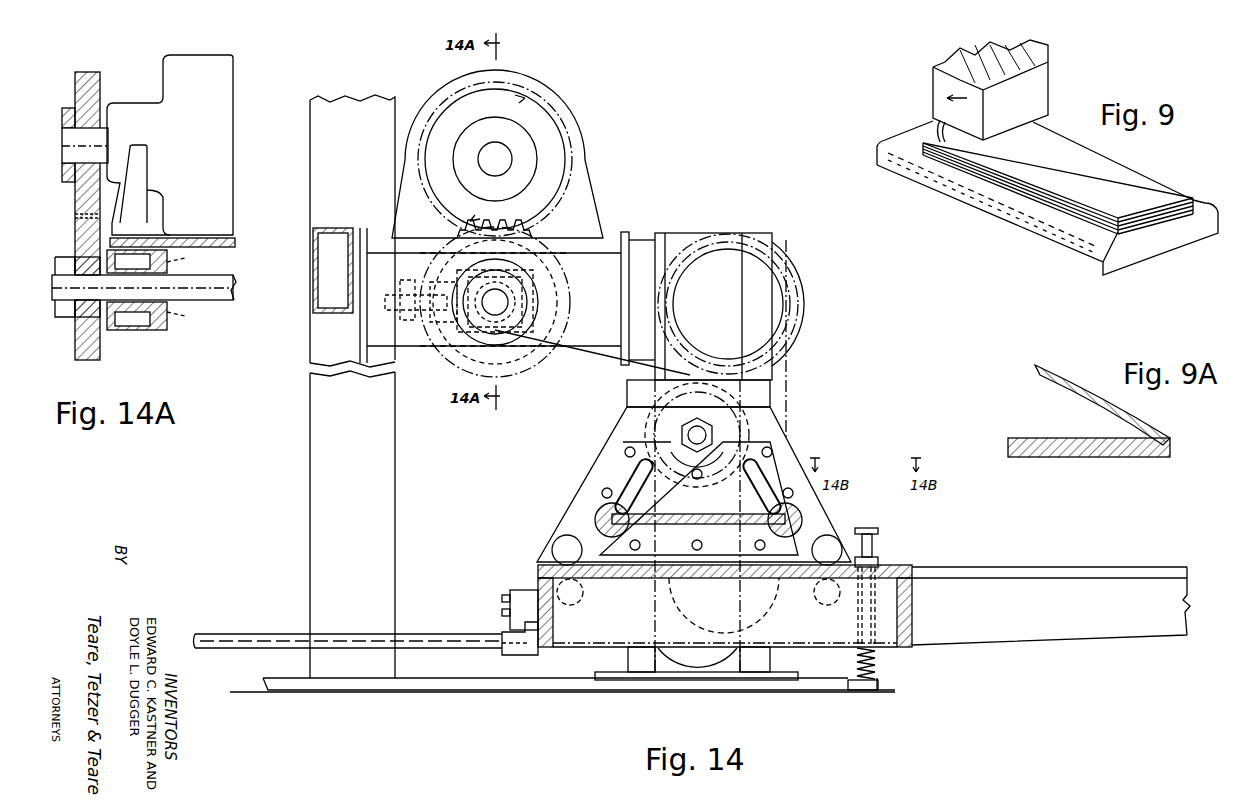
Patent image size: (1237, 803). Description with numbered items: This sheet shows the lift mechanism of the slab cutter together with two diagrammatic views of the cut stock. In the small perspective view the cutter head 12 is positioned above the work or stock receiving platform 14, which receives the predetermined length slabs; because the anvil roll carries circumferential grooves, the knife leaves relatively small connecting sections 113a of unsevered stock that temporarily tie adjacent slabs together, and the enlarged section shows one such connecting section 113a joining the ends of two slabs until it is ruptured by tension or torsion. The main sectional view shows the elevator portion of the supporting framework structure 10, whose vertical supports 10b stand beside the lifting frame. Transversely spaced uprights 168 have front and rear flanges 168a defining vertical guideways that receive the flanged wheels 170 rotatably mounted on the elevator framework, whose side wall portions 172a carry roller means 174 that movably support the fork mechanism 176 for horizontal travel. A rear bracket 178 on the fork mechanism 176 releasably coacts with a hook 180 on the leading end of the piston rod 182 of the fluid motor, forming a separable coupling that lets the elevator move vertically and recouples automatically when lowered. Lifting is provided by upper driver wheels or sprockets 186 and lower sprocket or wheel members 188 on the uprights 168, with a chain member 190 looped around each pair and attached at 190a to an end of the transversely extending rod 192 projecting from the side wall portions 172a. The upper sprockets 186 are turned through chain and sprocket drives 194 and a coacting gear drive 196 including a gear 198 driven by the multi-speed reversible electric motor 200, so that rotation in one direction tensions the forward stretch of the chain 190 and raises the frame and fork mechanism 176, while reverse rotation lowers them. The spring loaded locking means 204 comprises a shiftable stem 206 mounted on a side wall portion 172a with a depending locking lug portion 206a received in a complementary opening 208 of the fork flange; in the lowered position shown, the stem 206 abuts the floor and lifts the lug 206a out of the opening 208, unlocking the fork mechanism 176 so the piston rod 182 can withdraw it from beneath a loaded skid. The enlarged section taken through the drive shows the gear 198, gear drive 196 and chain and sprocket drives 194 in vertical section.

In FIG. 14, the supporting framework structure 10 is at (310, 412).
In FIG. 14, the vertical supports 10b is at (310, 468).
In FIG. 9, the cutter head 12 is at (1057, 75).
In FIG. 9, the work or stock receiving platform 14 is at (1023, 238).
In FIG. 9, the connecting sections 113a is at (935, 148).
In FIG. 9A, the connecting sections 113a is at (1172, 437).
In FIG. 14, the uprights 168 is at (768, 243).
In FIG. 14, the front and rear flanges 168a is at (632, 388).
In FIG. 14, the flanged wheels 170 is at (735, 400).
In FIG. 14, the side wall portions 172a is at (780, 440).
In FIG. 14, the roller means 174 is at (566, 545).
In FIG. 14, the fork mechanism 176 is at (1033, 568).
In FIG. 14, the rear bracket 178 is at (525, 592).
In FIG. 14, the hook 180 is at (526, 657).
In FIG. 14, the piston rod 182 is at (440, 640).
In FIG. 14, the upper driver wheels or sprockets 186 is at (790, 295).
In FIG. 14, the lower sprocket or wheel members 188 is at (660, 674).
In FIG. 14, the chain member 190 is at (790, 355).
In FIG. 14, the chain attachment 190a is at (790, 522).
In FIG. 14, the transversely extending rod 192 is at (783, 508).
In FIG. 14A, the chain and sprocket drives 194 is at (62, 317).
In FIG. 14, the chain and sprocket drives 194 is at (478, 325).
In FIG. 14A, the gear drive 196 is at (100, 340).
In FIG. 14, the gear drive 196 is at (503, 247).
In FIG. 14A, the gear 198 is at (78, 77).
In FIG. 14, the gear 198 is at (553, 183).
In FIG. 14A, the multi-speed reversible electric motor 200 is at (227, 67).
In FIG. 14, the multi-speed reversible electric motor 200 is at (545, 93).
In FIG. 14, the spring loaded locking means 204 is at (886, 677).
In FIG. 14, the spring loaded shiftable stem 206 is at (878, 661).
In FIG. 14, the locking lug portion 206a is at (880, 540).
In FIG. 14, the complementary opening 208 is at (885, 566).